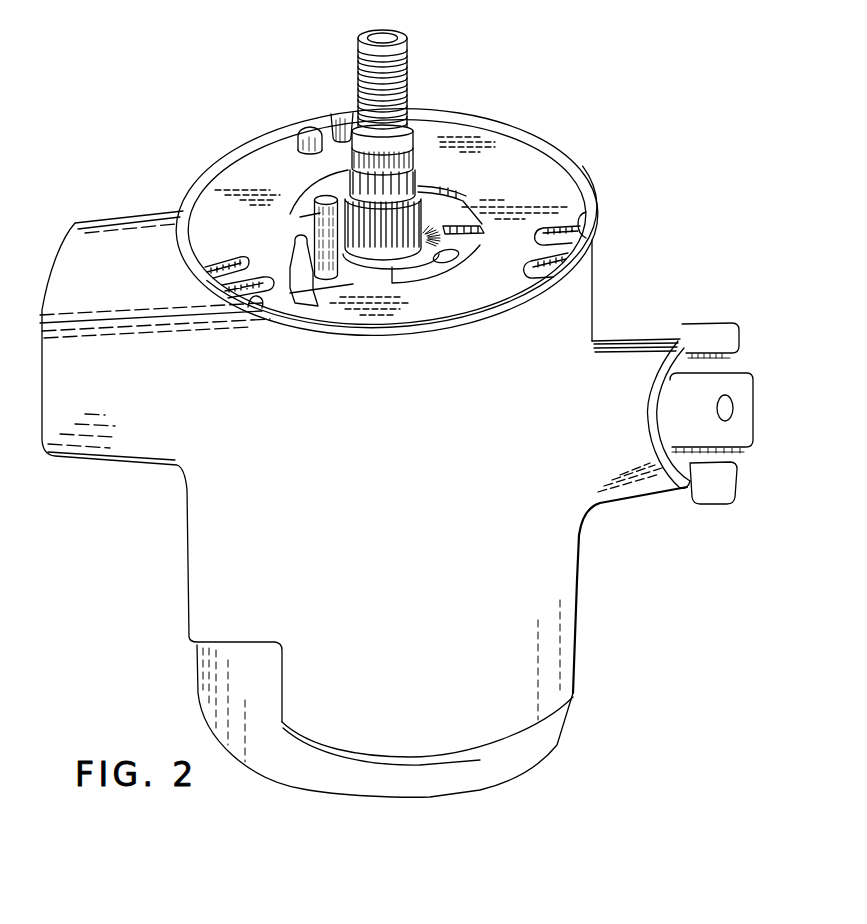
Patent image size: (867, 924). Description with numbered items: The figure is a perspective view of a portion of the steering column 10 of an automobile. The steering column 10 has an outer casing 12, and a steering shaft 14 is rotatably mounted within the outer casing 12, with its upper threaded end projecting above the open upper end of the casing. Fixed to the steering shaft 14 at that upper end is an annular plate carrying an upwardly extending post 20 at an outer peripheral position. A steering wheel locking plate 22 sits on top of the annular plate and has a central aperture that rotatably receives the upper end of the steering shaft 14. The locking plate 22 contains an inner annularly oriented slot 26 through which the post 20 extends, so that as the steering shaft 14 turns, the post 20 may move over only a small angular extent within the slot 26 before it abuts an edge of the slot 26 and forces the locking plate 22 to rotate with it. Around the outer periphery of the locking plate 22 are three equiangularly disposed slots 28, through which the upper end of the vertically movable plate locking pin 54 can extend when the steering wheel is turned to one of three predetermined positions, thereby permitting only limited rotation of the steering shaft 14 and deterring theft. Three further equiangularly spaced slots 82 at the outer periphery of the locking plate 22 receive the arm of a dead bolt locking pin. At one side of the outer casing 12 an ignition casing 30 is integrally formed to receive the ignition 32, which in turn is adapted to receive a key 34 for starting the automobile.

The steering column 10 is at (604, 242).
The outer casing 12 is at (548, 706).
The steering shaft 14 is at (412, 92).
The post 20 is at (323, 275).
The steering wheel locking plate 22 is at (222, 182).
The slot 26 is at (298, 238).
The slots 28 is at (332, 126).
The ignition casing 30 is at (636, 478).
The ignition 32 is at (667, 333).
The key 34 is at (737, 385).
The plate locking pin 54 is at (300, 131).
The slots 82 is at (343, 112).